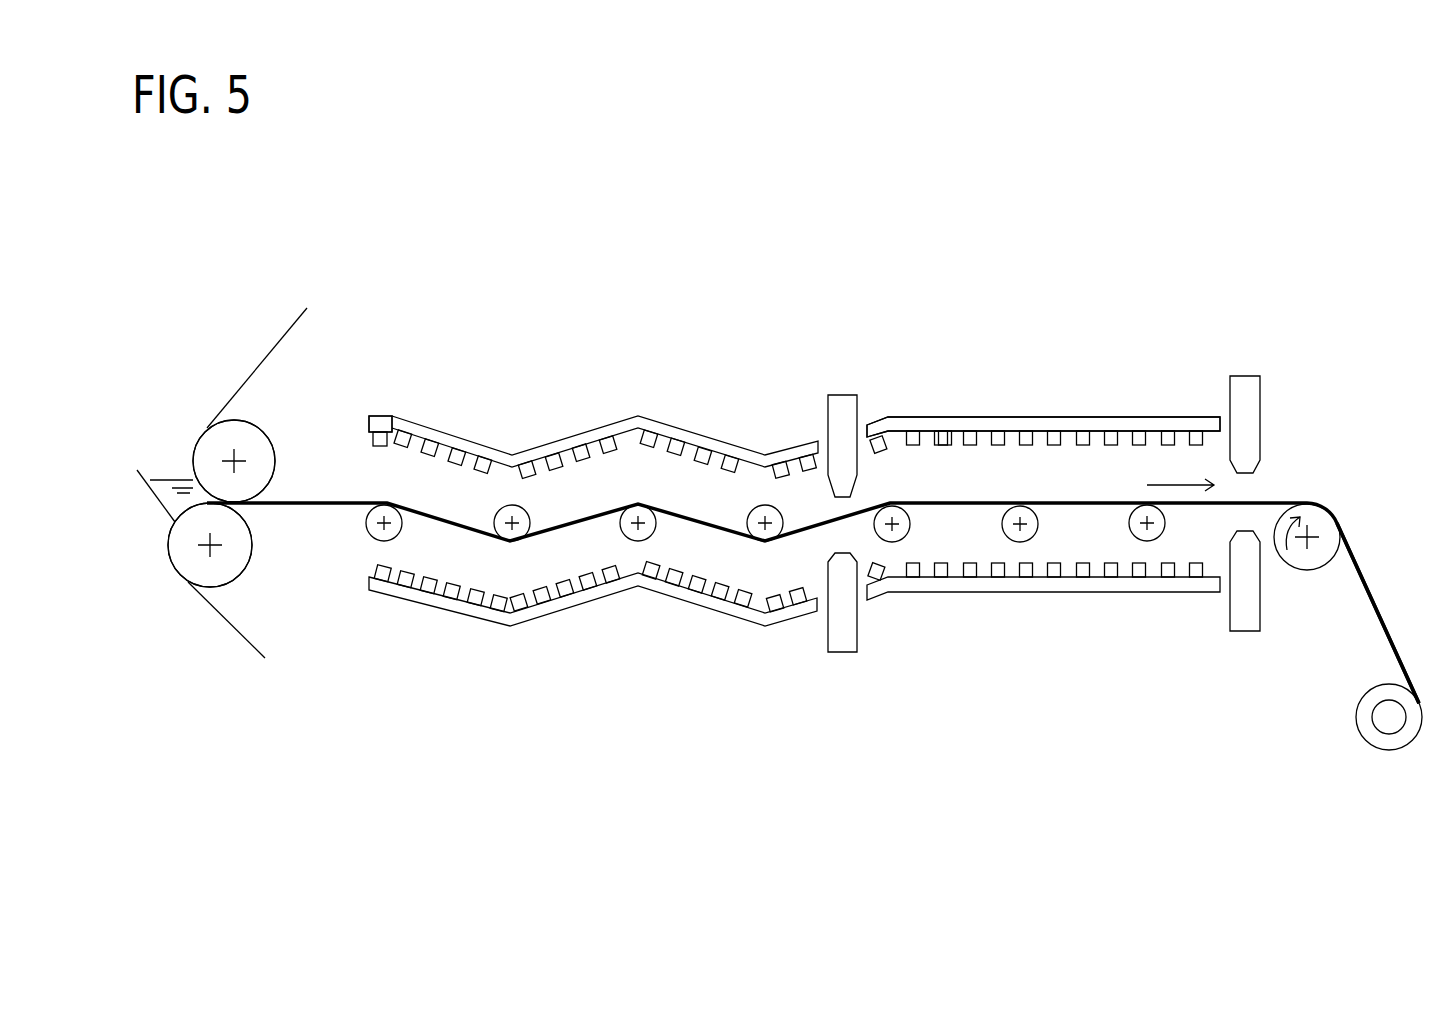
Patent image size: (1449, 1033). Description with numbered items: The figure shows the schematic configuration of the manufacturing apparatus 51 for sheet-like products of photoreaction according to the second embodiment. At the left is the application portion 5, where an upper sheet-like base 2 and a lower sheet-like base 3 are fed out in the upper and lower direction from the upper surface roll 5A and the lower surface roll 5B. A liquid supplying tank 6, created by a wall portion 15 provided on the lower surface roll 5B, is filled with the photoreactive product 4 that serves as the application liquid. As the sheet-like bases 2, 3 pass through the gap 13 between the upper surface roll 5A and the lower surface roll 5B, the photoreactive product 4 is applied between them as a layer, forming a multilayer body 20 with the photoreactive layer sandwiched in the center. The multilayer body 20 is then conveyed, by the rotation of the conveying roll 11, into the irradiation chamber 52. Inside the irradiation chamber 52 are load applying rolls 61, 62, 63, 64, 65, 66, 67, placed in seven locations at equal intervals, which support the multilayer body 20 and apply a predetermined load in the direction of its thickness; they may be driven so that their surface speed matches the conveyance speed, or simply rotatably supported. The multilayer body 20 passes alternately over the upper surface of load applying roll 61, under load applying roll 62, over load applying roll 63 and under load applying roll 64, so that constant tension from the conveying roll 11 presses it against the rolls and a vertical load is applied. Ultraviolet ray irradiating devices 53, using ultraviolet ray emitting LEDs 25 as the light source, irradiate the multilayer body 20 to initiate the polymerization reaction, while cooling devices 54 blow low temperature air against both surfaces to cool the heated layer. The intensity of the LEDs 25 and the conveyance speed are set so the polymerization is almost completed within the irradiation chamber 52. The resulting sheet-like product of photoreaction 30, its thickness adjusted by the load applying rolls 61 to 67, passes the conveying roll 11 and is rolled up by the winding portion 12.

The sheet-like base 2 is at (270, 343).
The sheet-like base 3 is at (227, 627).
The photoreactive product 4 is at (155, 480).
The application portion 5 is at (252, 415).
The upper surface roll 5A is at (260, 443).
The lower surface roll 5B is at (235, 557).
The liquid supplying tank 6 is at (158, 510).
The conveying roll 11 is at (1324, 519).
The winding portion 12 is at (1399, 735).
The gap 13 is at (238, 510).
The wall portion 15 is at (138, 478).
The multilayer body 20 is at (323, 500).
The ultraviolet ray emitting LED 25 is at (395, 418).
The sheet-like product of photoreaction 30 is at (1374, 587).
The manufacturing apparatus for sheet-like products of photoreaction 51 is at (1145, 262).
The irradiation chamber 52 is at (1072, 412).
The ultraviolet ray irradiating device 53 is at (658, 425).
The cooling device 54 is at (852, 417).
The load applying roll 61 is at (373, 533).
The load applying roll 62 is at (520, 533).
The load applying roll 63 is at (650, 532).
The load applying roll 64 is at (775, 533).
The load applying roll 65 is at (898, 535).
The load applying roll 66 is at (1028, 533).
The load applying roll 67 is at (1162, 531).